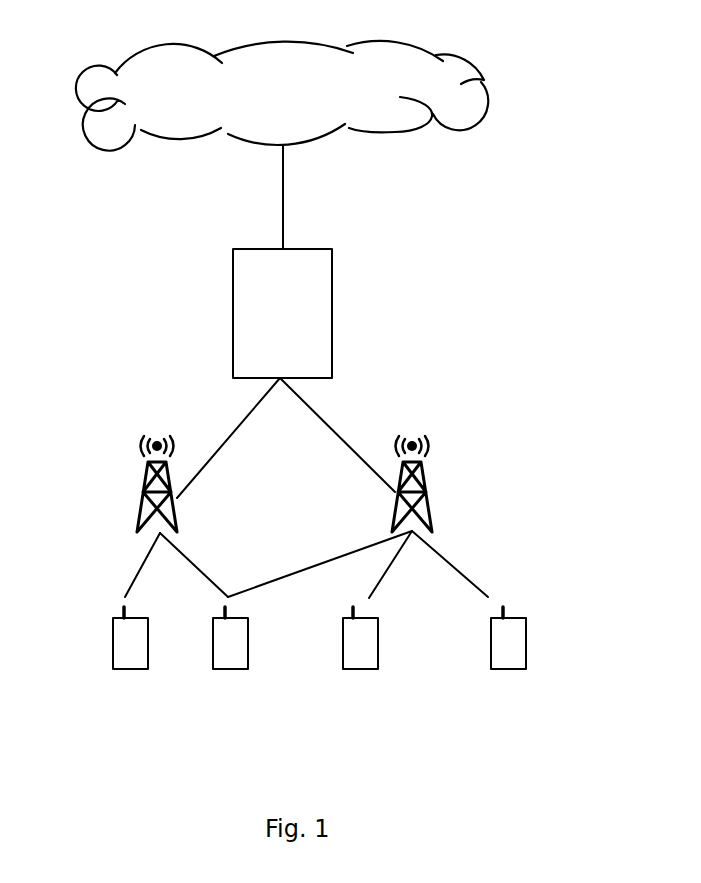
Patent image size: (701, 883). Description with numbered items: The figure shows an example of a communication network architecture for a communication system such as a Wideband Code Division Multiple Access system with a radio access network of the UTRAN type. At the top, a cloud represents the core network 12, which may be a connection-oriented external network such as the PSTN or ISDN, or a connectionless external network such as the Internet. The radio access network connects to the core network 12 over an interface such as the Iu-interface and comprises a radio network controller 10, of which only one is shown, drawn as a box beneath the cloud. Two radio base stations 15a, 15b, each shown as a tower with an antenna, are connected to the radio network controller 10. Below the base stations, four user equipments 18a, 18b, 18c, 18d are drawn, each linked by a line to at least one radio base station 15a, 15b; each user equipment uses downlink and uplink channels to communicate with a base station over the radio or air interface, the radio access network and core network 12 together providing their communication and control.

The core network 12 is at (483, 80).
The radio network controller 10 is at (332, 304).
The radio base station 15a is at (147, 492).
The radio base station 15b is at (427, 483).
The user equipment 18a is at (113, 642).
The user equipment 18b is at (225, 670).
The user equipment 18c is at (352, 670).
The user equipment 18d is at (526, 643).